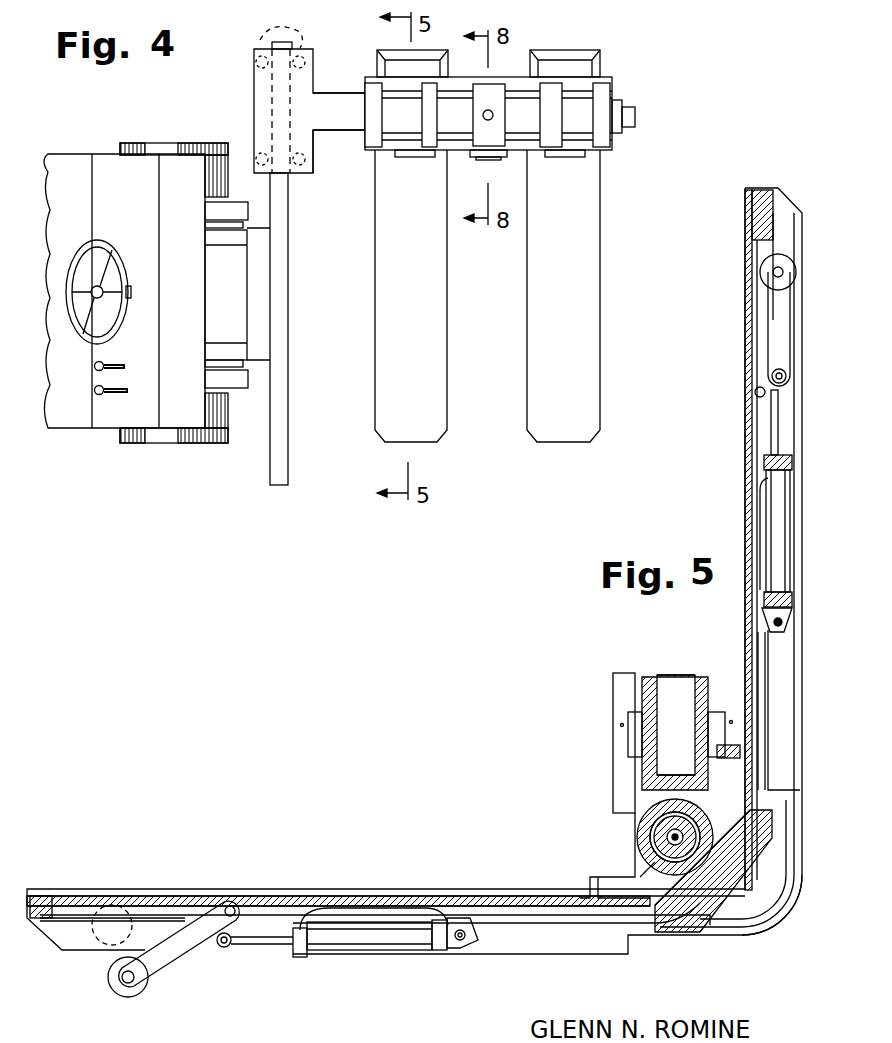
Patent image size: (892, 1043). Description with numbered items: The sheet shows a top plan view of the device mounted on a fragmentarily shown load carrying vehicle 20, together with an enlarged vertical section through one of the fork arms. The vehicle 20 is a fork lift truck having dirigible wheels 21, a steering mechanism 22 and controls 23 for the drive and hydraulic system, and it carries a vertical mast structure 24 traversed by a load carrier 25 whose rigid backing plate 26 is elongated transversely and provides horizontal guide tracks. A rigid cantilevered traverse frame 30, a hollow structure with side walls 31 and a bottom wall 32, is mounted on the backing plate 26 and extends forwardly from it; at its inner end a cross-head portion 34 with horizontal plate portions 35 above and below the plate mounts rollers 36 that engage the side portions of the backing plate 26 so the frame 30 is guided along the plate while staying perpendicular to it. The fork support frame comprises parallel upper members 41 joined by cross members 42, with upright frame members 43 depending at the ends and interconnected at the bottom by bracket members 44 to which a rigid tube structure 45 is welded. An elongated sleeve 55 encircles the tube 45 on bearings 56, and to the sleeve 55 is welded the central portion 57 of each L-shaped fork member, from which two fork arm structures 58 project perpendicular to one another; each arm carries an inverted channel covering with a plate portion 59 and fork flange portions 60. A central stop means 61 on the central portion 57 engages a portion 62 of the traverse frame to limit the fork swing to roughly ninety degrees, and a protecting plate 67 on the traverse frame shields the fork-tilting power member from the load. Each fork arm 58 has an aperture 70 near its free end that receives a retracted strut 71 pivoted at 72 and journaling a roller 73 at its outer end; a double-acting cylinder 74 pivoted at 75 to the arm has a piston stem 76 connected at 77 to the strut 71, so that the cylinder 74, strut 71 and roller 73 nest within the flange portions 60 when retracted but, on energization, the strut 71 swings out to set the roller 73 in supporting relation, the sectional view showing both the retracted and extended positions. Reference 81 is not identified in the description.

In FIG. 4, the load carrying vehicle 20 is at (65, 430).
In FIG. 4, the dirigible wheels 21 is at (163, 436).
In FIG. 4, the steering mechanism 22 is at (108, 263).
In FIG. 4, the controls 23 is at (128, 388).
In FIG. 4, the vertical mast structure 24 is at (236, 383).
In FIG. 4, the load carrier 25 is at (237, 307).
In FIG. 4, the backing plate 26 is at (282, 288).
In FIG. 4, the traverse frame 30 is at (333, 108).
In FIG. 5, the traverse frame 30 is at (668, 678).
In FIG. 5, the side walls 31 is at (702, 697).
In FIG. 5, the bottom wall 32 is at (674, 782).
In FIG. 4, the cross-head portion 34 is at (308, 140).
In FIG. 4, the horizontal plate portions 35 is at (262, 97).
In FIG. 4, the rollers 36 is at (273, 29).
In FIG. 4, the upper members 41 is at (578, 86).
In FIG. 4, the cross members 42 is at (604, 118).
In FIG. 5, the upright frame members 43 is at (613, 700).
In FIG. 5, the bracket members 44 is at (633, 802).
In FIG. 5, the tube structure 45 is at (660, 838).
In FIG. 5, the sleeve 55 is at (650, 855).
In FIG. 5, the bearings 56 is at (650, 822).
In FIG. 5, the central portion 57 is at (742, 848).
In FIG. 5, the fork arm structures 58 is at (750, 447).
In FIG. 4, the plate portion 59 is at (565, 70).
In FIG. 5, the plate portion 59 is at (745, 375).
In FIG. 5, the fork flange portions 60 is at (785, 220).
In FIG. 5, the central stop means 61 is at (585, 880).
In FIG. 5, the portion of the traverse frame 62 is at (628, 742).
In FIG. 4, the protecting plate 67 is at (490, 160).
In FIG. 5, the aperture 70 is at (755, 308).
In FIG. 5, the strut 71 is at (768, 340).
In FIG. 5, the pivot 72 is at (757, 393).
In FIG. 5, the roller 73 is at (760, 270).
In FIG. 5, the cylinder 74 is at (775, 518).
In FIG. 5, the pivot 75 is at (760, 622).
In FIG. 5, the piston stem 76 is at (771, 418).
In FIG. 5, the pivotal connection 77 is at (226, 950).
In FIG. 5, the channel flange 81 is at (762, 905).